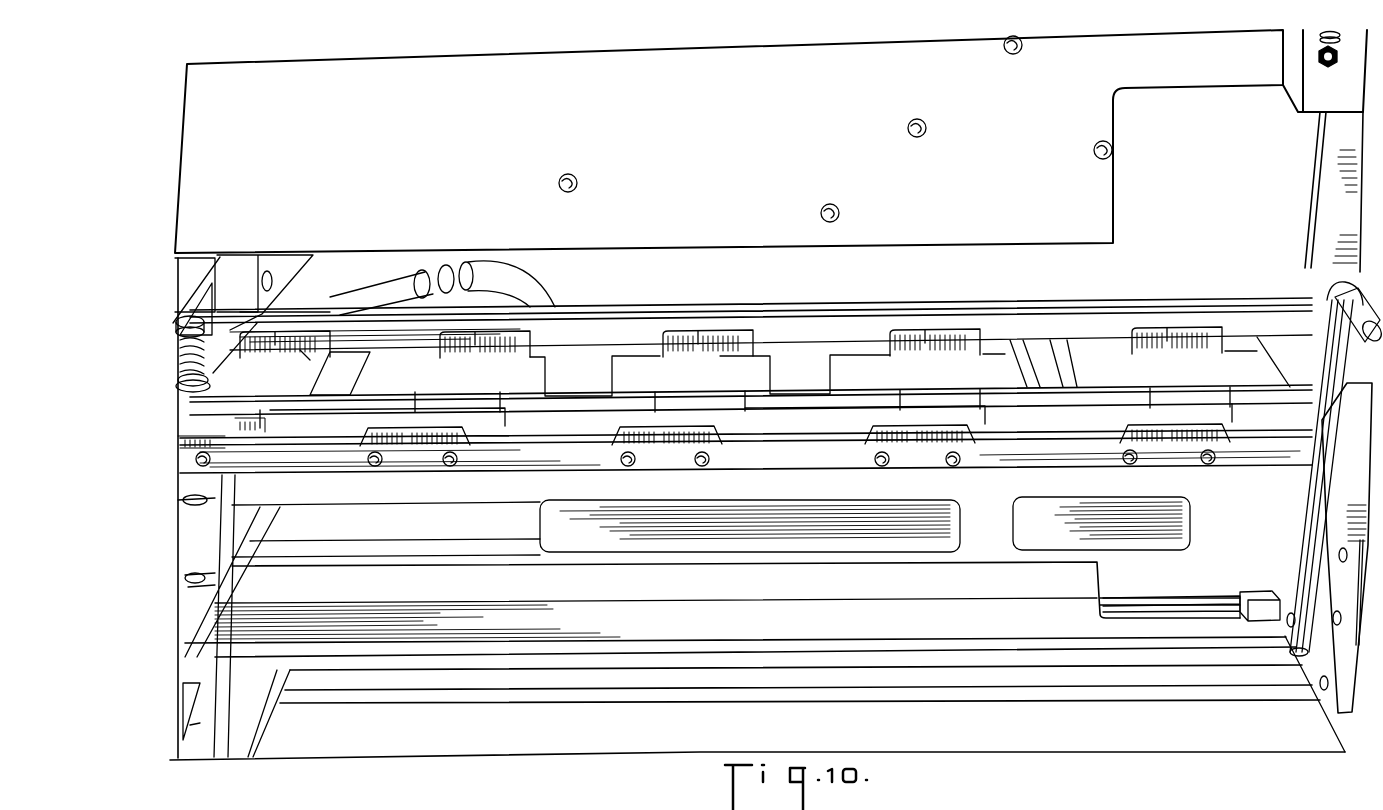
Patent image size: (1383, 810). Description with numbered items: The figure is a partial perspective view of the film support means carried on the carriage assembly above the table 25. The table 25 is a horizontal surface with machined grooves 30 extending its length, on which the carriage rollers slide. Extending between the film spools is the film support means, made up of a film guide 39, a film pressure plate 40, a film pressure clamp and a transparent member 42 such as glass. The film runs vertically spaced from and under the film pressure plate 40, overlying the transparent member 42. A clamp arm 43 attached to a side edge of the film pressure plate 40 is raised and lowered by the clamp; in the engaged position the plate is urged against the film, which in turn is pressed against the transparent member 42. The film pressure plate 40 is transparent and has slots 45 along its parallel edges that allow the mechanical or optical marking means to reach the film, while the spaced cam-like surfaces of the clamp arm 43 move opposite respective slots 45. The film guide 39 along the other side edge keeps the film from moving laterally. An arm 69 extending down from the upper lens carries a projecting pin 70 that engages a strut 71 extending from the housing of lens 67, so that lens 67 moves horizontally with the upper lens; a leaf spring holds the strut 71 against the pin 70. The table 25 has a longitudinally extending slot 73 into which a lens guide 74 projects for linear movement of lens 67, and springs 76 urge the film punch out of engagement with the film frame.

The table 25 is at (988, 628).
The machined grooves 30 is at (1085, 678).
The film guide 39 is at (977, 341).
The film pressure plate 40 is at (632, 396).
The transparent member 42 is at (830, 408).
The clamp arm 43 is at (497, 471).
The slots 45 is at (541, 415).
The lens 67 is at (1340, 527).
The arm 69 is at (1337, 204).
The projecting pin 70 is at (1363, 334).
The strut 71 is at (1340, 372).
The longitudinally extending slot 73 is at (1181, 612).
The lens guide 74 is at (1262, 598).
The springs 76 is at (214, 369).